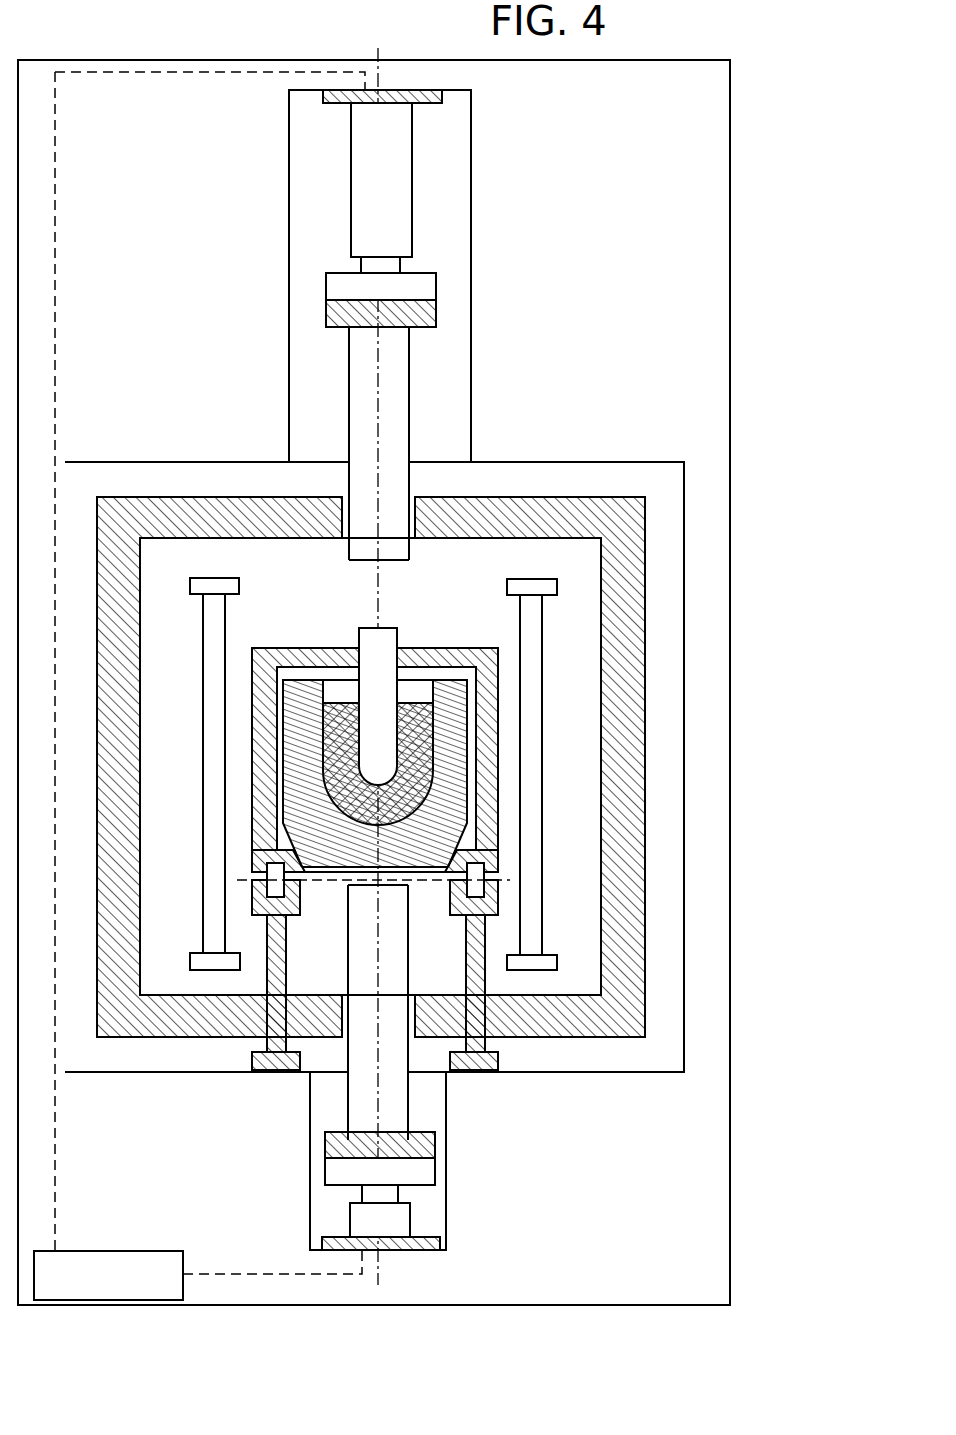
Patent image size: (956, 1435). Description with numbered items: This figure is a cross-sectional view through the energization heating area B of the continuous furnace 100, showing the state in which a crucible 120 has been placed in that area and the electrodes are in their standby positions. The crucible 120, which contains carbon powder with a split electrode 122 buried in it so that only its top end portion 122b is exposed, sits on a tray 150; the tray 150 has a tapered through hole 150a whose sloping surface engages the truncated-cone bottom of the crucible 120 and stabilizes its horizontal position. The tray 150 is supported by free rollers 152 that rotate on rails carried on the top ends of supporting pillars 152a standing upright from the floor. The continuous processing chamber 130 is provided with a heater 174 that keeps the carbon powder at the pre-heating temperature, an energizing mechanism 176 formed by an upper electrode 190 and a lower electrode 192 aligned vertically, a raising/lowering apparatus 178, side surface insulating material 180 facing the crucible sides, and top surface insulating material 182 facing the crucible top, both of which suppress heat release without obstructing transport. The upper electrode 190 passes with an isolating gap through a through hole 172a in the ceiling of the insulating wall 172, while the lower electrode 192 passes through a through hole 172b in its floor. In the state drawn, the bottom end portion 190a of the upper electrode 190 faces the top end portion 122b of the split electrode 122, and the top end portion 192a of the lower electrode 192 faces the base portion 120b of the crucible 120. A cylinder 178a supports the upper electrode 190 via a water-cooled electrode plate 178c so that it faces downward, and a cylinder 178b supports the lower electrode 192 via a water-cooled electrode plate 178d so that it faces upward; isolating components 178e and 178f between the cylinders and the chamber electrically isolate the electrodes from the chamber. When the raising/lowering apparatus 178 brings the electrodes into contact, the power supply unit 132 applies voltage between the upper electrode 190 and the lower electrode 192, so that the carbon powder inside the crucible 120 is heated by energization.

The molding apparatus 100 is at (76, 60).
The crucible 120 is at (315, 811).
The base portion of the crucible 120b is at (347, 872).
The split electrode 122 is at (376, 684).
The top end portion of the split electrode 122b is at (412, 607).
The continuous processing chamber 130 is at (111, 489).
The power supply unit 132 is at (96, 1244).
The tray 150 is at (254, 854).
The through hole 150a is at (448, 898).
The free roller 152 is at (252, 876).
The supporting pillar 152a is at (287, 955).
The insulating wall 172 is at (371, 780).
The through hole 172a is at (414, 496).
The through hole 172b is at (412, 1040).
The heater 174 is at (226, 641).
The energizing mechanism 176 is at (282, 738).
The raising/lowering apparatus 178 is at (474, 696).
The cylinder 178a is at (412, 183).
The cylinder 178b is at (410, 1221).
The water-cooled electrode plate 178c is at (436, 312).
The water-cooled electrode plate 178d is at (435, 1145).
The isolating component 178e is at (442, 97).
The isolating component 178f is at (440, 1243).
The side surface insulating material 180 is at (422, 748).
The top surface insulating material 182 is at (475, 648).
The upper electrode 190 is at (255, 464).
The bottom end portion of the upper electrode 190a is at (362, 561).
The lower electrode 192 is at (283, 1015).
The top end portion of the lower electrode 192a is at (391, 881).